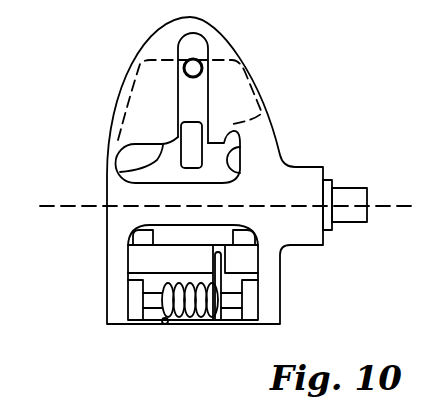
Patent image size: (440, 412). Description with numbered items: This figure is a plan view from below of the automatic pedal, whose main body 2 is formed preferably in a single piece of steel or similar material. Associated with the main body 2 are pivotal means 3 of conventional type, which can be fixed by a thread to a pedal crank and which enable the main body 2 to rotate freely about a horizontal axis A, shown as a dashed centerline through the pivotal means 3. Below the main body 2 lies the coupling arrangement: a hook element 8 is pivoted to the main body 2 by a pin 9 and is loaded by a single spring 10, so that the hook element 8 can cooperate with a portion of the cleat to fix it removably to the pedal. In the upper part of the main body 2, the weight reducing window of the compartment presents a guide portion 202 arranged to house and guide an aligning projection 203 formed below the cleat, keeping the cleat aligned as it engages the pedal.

The main body 2 is at (262, 138).
The pivotal means 3 is at (330, 182).
The hook element 8 is at (137, 312).
The pin 9 is at (231, 313).
The spring 10 is at (183, 315).
The guide portion 202 is at (190, 98).
The aligning projection 203 is at (193, 59).
The horizontal axis A is at (52, 205).